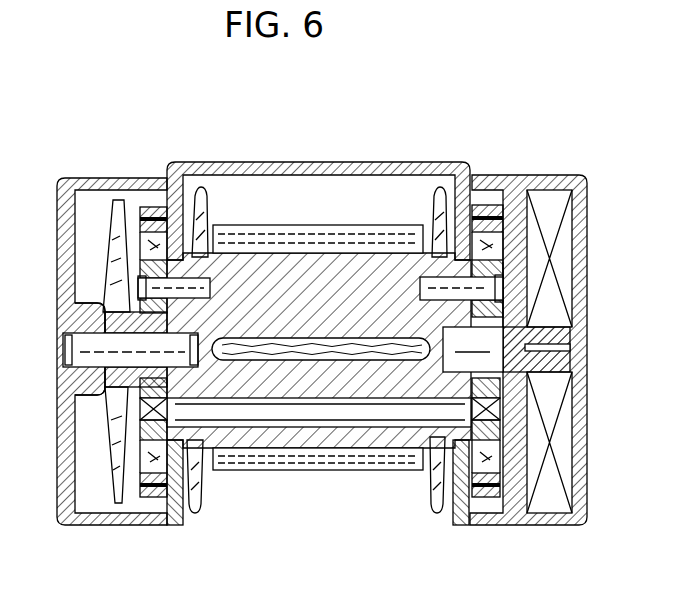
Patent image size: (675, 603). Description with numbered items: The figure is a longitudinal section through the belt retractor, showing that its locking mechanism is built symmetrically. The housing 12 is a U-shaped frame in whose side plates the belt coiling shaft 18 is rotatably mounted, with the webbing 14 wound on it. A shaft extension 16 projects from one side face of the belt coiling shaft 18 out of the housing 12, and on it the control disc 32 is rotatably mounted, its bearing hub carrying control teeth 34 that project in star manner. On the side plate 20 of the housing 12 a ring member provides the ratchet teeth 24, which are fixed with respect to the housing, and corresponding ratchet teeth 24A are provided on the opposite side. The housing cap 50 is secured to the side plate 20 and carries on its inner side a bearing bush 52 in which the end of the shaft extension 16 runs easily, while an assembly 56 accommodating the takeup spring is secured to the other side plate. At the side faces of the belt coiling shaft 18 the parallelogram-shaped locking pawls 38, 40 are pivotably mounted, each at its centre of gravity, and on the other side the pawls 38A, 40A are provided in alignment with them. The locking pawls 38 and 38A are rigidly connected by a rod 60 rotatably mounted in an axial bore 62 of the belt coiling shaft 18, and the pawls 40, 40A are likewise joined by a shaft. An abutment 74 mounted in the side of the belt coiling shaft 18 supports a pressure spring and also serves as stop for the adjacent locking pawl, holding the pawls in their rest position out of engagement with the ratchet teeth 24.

The housing 12 is at (380, 162).
The webbing 14 is at (400, 470).
The shaft extension 16 is at (80, 350).
The belt coiling shaft 18 is at (310, 440).
The side plate 20 is at (183, 522).
The ratchet teeth 24 is at (140, 465).
The ratchet teeth 24A is at (502, 262).
The control disc 32 is at (95, 303).
The control teeth 34 is at (112, 442).
The locking pawl 38 is at (140, 430).
The locking pawl 38A is at (497, 430).
The locking pawl 40 is at (135, 258).
The locking pawl 40A is at (500, 262).
The housing cap 50 is at (60, 284).
The bearing bush 52 is at (100, 387).
The assembly 56 is at (567, 288).
The rod 60 is at (268, 417).
The axial bore 62 is at (342, 430).
The abutment 74 is at (190, 282).